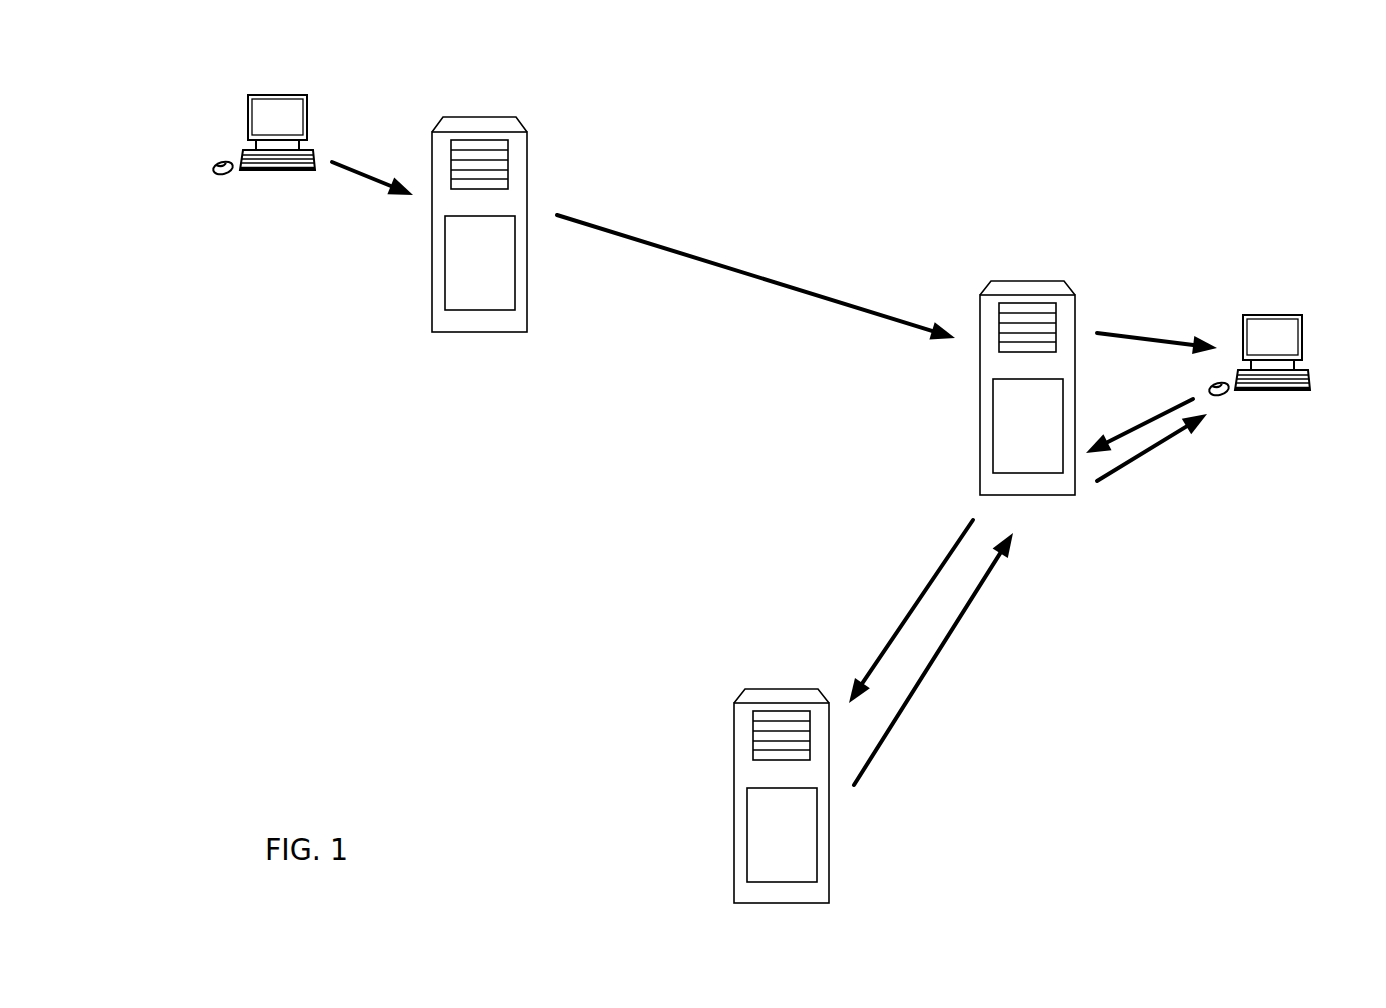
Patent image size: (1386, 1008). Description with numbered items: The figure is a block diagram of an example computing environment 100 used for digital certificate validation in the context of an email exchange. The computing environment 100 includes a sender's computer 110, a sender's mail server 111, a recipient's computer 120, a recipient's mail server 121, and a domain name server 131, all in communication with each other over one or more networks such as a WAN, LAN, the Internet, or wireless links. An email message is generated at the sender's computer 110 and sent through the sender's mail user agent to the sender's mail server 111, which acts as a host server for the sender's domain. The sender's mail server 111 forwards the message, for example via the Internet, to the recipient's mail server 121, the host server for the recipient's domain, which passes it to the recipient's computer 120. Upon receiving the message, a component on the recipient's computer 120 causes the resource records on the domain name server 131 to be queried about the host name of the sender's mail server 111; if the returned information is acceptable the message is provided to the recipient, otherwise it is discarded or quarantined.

The computing environment 100 is at (338, 596).
The sender's computer 110 is at (287, 222).
The sender's mail server 111 is at (575, 152).
The recipient's computer 120 is at (1281, 284).
The recipient's mail server 121 is at (1020, 250).
The domain name server 131 is at (757, 645).